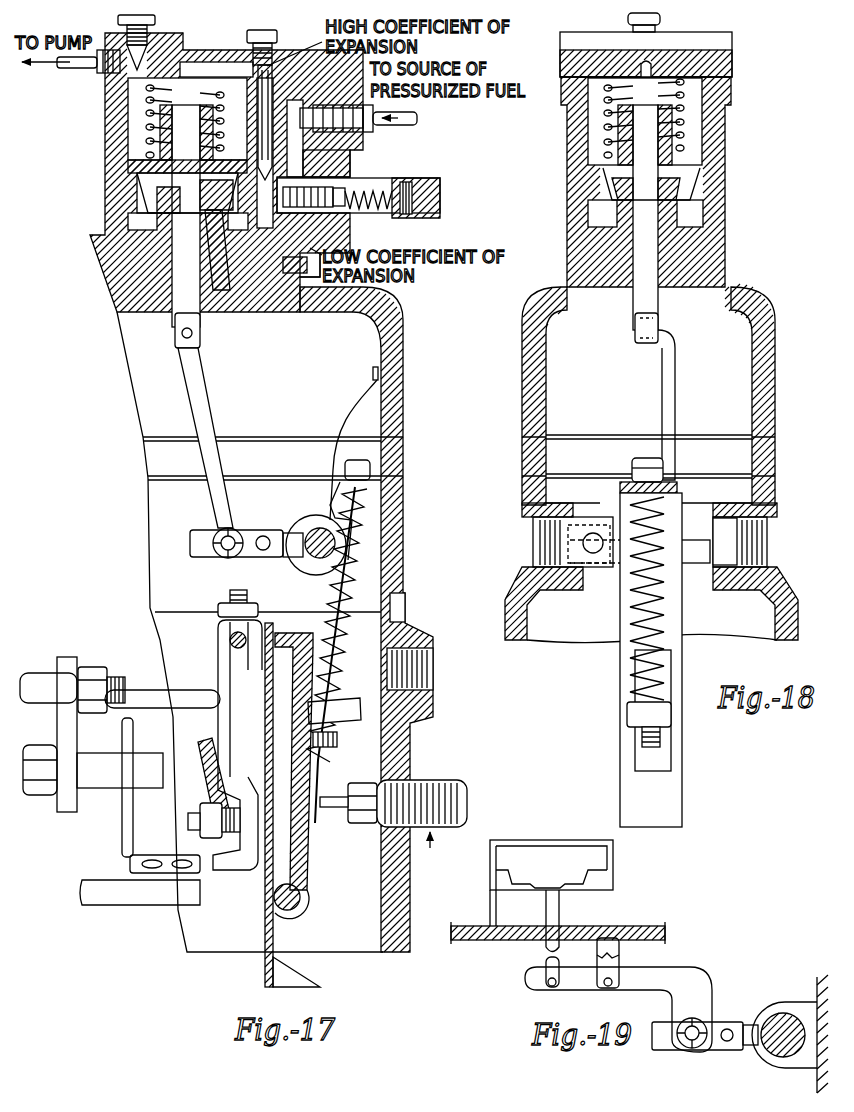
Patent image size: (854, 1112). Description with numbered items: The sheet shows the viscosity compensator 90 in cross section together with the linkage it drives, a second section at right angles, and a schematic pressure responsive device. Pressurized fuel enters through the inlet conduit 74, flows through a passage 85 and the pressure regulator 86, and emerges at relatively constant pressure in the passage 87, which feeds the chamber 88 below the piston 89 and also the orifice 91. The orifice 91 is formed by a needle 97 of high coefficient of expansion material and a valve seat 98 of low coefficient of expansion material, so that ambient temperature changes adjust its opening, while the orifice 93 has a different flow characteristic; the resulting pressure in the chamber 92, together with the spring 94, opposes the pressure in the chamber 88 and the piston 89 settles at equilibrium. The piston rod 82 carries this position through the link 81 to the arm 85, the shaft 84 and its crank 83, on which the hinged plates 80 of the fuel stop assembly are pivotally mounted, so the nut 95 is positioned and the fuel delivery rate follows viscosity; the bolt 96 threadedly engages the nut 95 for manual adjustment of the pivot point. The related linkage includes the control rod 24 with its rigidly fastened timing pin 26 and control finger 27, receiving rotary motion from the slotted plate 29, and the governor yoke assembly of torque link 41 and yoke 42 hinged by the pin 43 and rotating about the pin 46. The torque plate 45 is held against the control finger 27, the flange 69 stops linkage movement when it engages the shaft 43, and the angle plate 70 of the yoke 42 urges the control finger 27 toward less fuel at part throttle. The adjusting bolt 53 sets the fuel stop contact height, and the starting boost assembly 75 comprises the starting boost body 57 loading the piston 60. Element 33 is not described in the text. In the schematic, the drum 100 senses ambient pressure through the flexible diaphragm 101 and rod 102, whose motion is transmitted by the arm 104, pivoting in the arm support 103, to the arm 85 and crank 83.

In FIG. 17, the control rod 24 is at (32, 672).
In FIG. 17, the timing pin 26 is at (88, 778).
In FIG. 17, the control finger 27 is at (180, 690).
In FIG. 17, the slotted plate 29 is at (80, 892).
In FIG. 17, the bracket 33 is at (125, 837).
In FIG. 17, the torque link 41 is at (213, 785).
In FIG. 17, the yoke 42 is at (277, 940).
In FIG. 17, the pin 43 is at (230, 643).
In FIG. 17, the torque plate 45 is at (222, 718).
In FIG. 17, the pin 46 is at (302, 892).
In FIG. 17, the adjusting bolt 53 is at (370, 467).
In FIG. 17, the starting boost body 57 is at (440, 780).
In FIG. 17, the piston 60 is at (340, 810).
In FIG. 17, the flange 69 is at (247, 667).
In FIG. 17, the angle plate 70 is at (290, 745).
In FIG. 17, the inlet conduit 74 is at (403, 122).
In FIG. 17, the starting boost assembly 75 is at (440, 853).
In FIG. 17, the hinged plates 80 is at (323, 772).
In FIG. 18, the hinged plates 80 is at (620, 768).
In FIG. 17, the link 81 is at (200, 408).
In FIG. 18, the link 81 is at (675, 410).
In FIG. 17, the piston rod 82 is at (200, 335).
In FIG. 18, the piston rod 82 is at (658, 322).
In FIG. 17, the crank 83 is at (307, 567).
In FIG. 18, the crank 83 is at (692, 563).
In FIG. 19, the crank 83 is at (762, 1052).
In FIG. 18, the shaft 84 is at (713, 530).
In FIG. 17, the arm 85 is at (325, 165).
In FIG. 18, the arm 85 is at (595, 555).
In FIG. 19, the arm 85 is at (727, 1025).
In FIG. 17, the pressure regulator 86 is at (367, 177).
In FIG. 17, the passage 87 is at (330, 222).
In FIG. 17, the chamber 88 is at (143, 185).
In FIG. 18, the chamber 88 is at (605, 192).
In FIG. 17, the piston 89 is at (126, 158).
In FIG. 18, the piston 89 is at (590, 160).
In FIG. 17, the viscosity compensator 90 is at (85, 270).
In FIG. 17, the orifice 91 is at (258, 215).
In FIG. 17, the chamber 92 is at (235, 88).
In FIG. 18, the chamber 92 is at (590, 108).
In FIG. 17, the orifice 93 is at (128, 82).
In FIG. 17, the spring 94 is at (150, 113).
In FIG. 18, the spring 94 is at (605, 128).
In FIG. 17, the nut 95 is at (353, 713).
In FIG. 18, the nut 95 is at (627, 712).
In FIG. 17, the bolt 96 is at (337, 738).
In FIG. 18, the bolt 96 is at (660, 737).
In FIG. 17, the needle 97 is at (270, 105).
In FIG. 17, the valve seat 98 is at (245, 155).
In FIG. 19, the drum 100 is at (613, 860).
In FIG. 19, the flexible diaphragm 101 is at (600, 882).
In FIG. 19, the rod 102 is at (559, 915).
In FIG. 19, the arm support 103 is at (597, 952).
In FIG. 19, the arm 104 is at (672, 967).